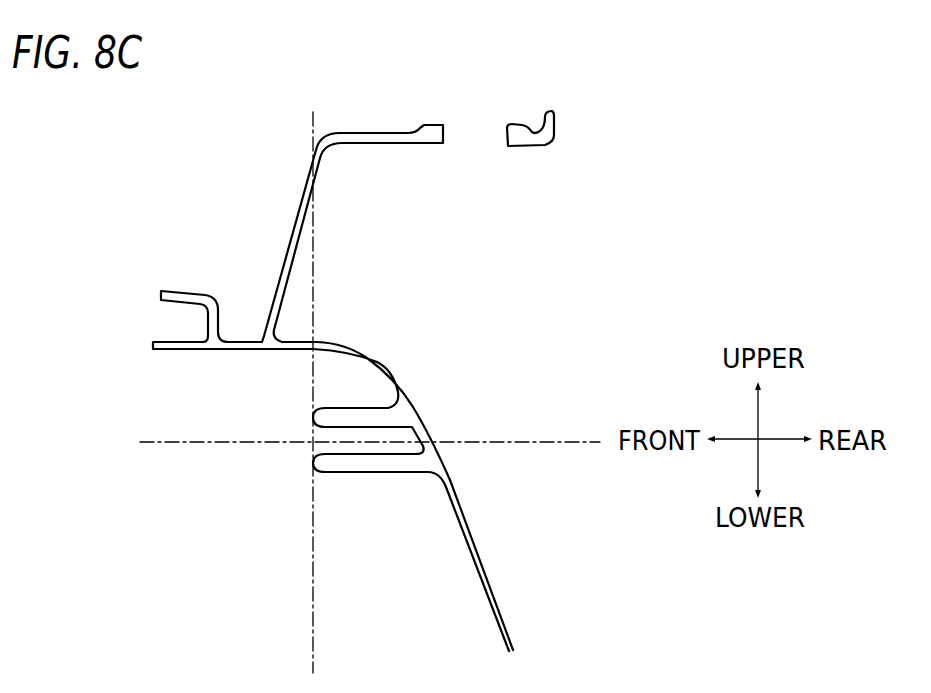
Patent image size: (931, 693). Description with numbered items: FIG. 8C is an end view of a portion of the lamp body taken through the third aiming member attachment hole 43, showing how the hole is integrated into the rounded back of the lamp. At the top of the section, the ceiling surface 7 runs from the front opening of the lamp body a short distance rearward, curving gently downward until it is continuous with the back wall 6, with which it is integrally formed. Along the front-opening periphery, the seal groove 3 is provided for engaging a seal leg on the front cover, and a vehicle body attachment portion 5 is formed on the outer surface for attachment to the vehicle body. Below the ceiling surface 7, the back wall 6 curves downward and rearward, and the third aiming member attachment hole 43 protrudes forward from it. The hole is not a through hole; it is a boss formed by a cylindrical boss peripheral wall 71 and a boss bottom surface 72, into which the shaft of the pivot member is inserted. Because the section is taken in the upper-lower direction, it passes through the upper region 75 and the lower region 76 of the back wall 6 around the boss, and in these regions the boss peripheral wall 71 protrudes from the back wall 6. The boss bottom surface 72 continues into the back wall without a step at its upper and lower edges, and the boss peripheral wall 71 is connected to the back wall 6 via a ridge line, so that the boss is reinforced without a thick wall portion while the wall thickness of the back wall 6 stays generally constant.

The seal groove 3 is at (186, 291).
The vehicle body attachment portion 5 is at (298, 218).
The back wall 6 is at (518, 614).
The ceiling surface 7 is at (318, 342).
The third aiming member attachment hole 43 is at (308, 448).
The boss peripheral wall 71 is at (368, 475).
The boss bottom surface 72 is at (427, 428).
The upper region 75 is at (384, 362).
The lower region 76 is at (468, 521).